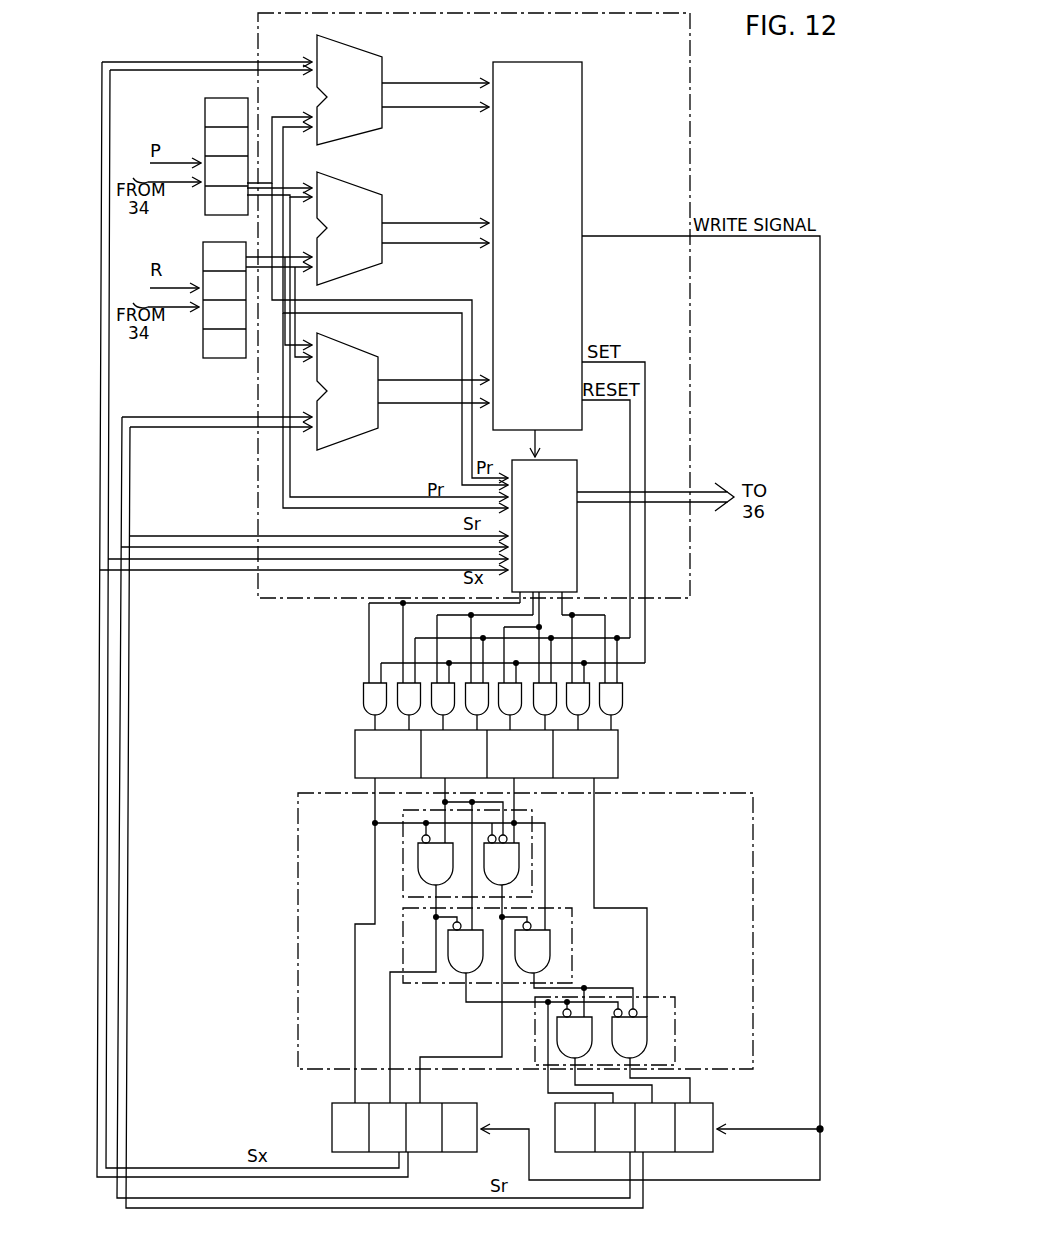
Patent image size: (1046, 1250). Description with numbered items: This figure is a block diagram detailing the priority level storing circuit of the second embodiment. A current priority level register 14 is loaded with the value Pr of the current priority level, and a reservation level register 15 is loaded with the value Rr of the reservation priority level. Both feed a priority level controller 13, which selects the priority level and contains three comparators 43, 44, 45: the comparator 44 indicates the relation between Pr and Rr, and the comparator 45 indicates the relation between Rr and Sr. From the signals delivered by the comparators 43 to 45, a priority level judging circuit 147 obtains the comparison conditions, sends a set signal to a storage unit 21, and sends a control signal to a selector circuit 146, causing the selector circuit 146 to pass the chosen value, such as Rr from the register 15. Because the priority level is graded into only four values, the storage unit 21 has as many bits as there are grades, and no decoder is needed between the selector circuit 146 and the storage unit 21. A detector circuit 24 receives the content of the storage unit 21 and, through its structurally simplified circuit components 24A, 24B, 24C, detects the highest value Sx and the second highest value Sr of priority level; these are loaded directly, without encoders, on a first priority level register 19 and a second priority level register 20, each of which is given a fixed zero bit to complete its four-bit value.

The priority level controller 13 is at (693, 92).
The current priority level register 14 is at (205, 100).
The reservation level register 15 is at (203, 246).
The first priority level register 19 is at (477, 1106).
The second priority level register 20 is at (713, 1106).
The storage unit 21 is at (618, 738).
The detector circuit 24 is at (532, 920).
The circuit component of the detector circuit 24A is at (403, 862).
The circuit component of the detector circuit 24B is at (675, 998).
The circuit component of the detector circuit 24C is at (572, 945).
The comparator 43 is at (362, 47).
The comparator 44 is at (362, 182).
The comparator 45 is at (360, 342).
The selector circuit 146 is at (548, 460).
The priority level judging circuit 147 is at (582, 130).